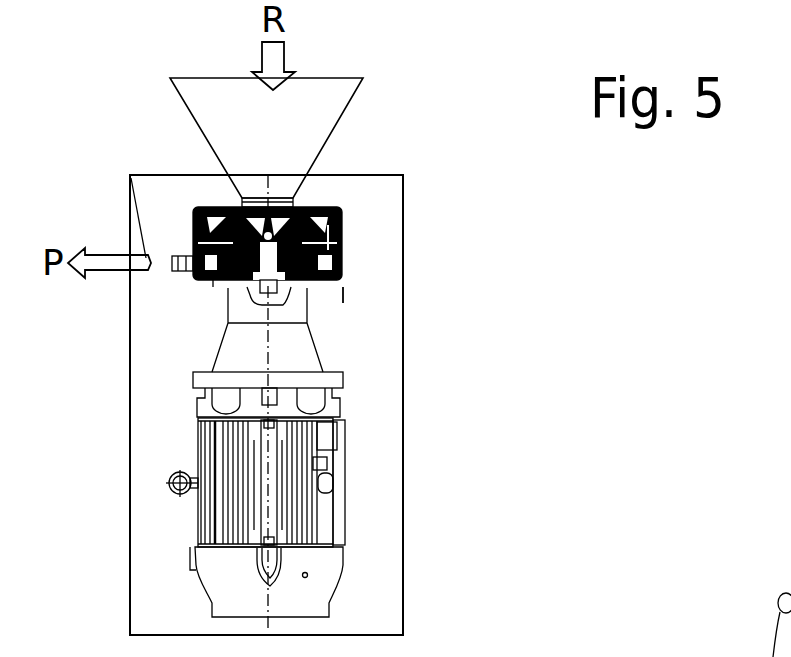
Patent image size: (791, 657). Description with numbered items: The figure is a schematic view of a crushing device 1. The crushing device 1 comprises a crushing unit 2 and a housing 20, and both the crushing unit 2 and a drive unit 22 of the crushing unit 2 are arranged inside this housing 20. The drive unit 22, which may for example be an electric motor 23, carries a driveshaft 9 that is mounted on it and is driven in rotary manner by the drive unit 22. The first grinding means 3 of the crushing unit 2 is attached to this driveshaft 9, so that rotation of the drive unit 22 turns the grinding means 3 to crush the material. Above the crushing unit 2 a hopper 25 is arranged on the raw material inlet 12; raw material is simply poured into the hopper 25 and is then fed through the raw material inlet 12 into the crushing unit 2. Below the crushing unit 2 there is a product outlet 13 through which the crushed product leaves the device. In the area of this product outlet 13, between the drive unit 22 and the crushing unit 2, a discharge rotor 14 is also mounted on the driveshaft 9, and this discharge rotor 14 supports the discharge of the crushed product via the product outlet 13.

The crushing device 1 is at (473, 402).
The crushing unit 2 is at (369, 256).
The first grinding means 3 is at (344, 208).
The driveshaft 9 is at (213, 287).
The raw material inlet 12 is at (298, 200).
The product outlet 13 is at (130, 176).
The discharge rotor 14 is at (342, 263).
The housing 20 is at (130, 392).
The drive unit 22 is at (332, 502).
The electric motor 23 is at (335, 493).
The hopper 25 is at (288, 128).